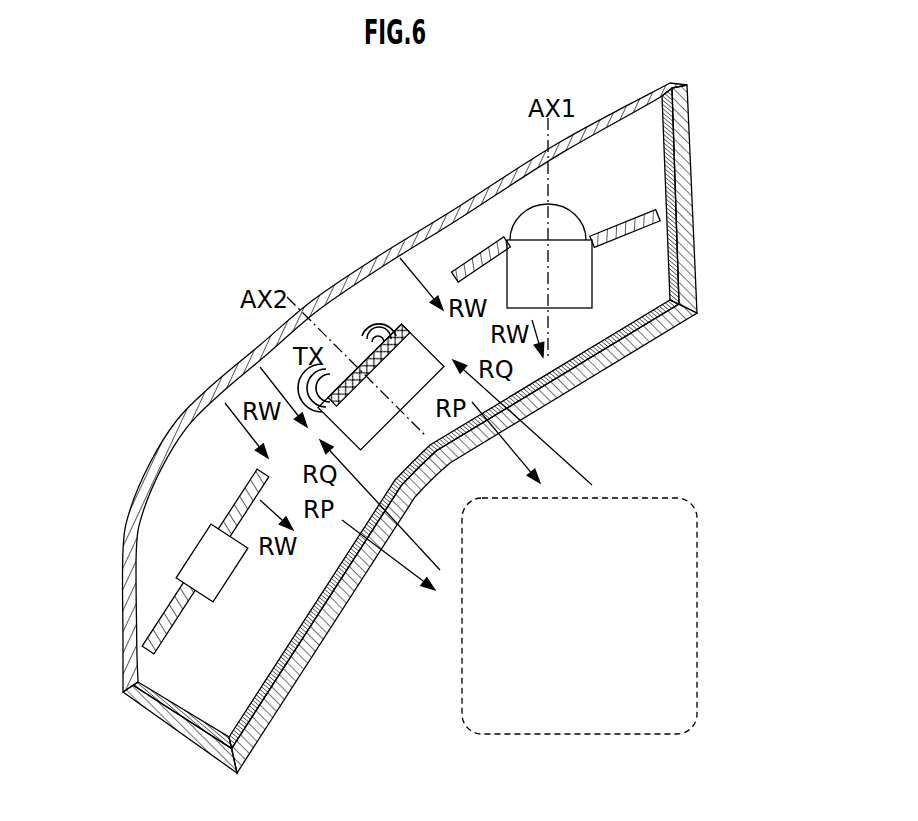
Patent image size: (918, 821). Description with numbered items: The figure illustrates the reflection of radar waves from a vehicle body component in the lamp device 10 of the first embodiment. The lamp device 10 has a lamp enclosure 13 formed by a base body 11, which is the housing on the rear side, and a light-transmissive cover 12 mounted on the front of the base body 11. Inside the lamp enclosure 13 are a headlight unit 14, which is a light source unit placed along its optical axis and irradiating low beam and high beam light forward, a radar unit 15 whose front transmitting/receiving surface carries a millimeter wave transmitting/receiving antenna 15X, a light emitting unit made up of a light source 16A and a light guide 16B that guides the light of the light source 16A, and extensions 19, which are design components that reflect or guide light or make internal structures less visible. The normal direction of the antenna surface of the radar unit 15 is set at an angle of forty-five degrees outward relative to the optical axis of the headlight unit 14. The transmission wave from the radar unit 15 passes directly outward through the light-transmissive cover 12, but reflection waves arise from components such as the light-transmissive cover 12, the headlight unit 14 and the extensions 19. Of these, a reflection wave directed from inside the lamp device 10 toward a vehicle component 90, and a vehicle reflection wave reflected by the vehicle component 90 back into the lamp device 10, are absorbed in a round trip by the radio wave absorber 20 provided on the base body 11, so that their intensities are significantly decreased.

The lamp device 10 is at (262, 172).
The base body 11 is at (127, 697).
The light-transmissive cover 12 is at (407, 248).
The lamp enclosure 13 is at (63, 663).
The headlight unit 14 is at (592, 308).
The radar unit 15 is at (403, 325).
The millimeter wave transmitting/receiving antenna 15X is at (365, 360).
The light source 16A is at (202, 557).
The light guide 16B is at (237, 503).
The extensions 19 is at (472, 260).
The radio wave absorber 20 is at (185, 735).
The vehicle component 90 is at (700, 556).